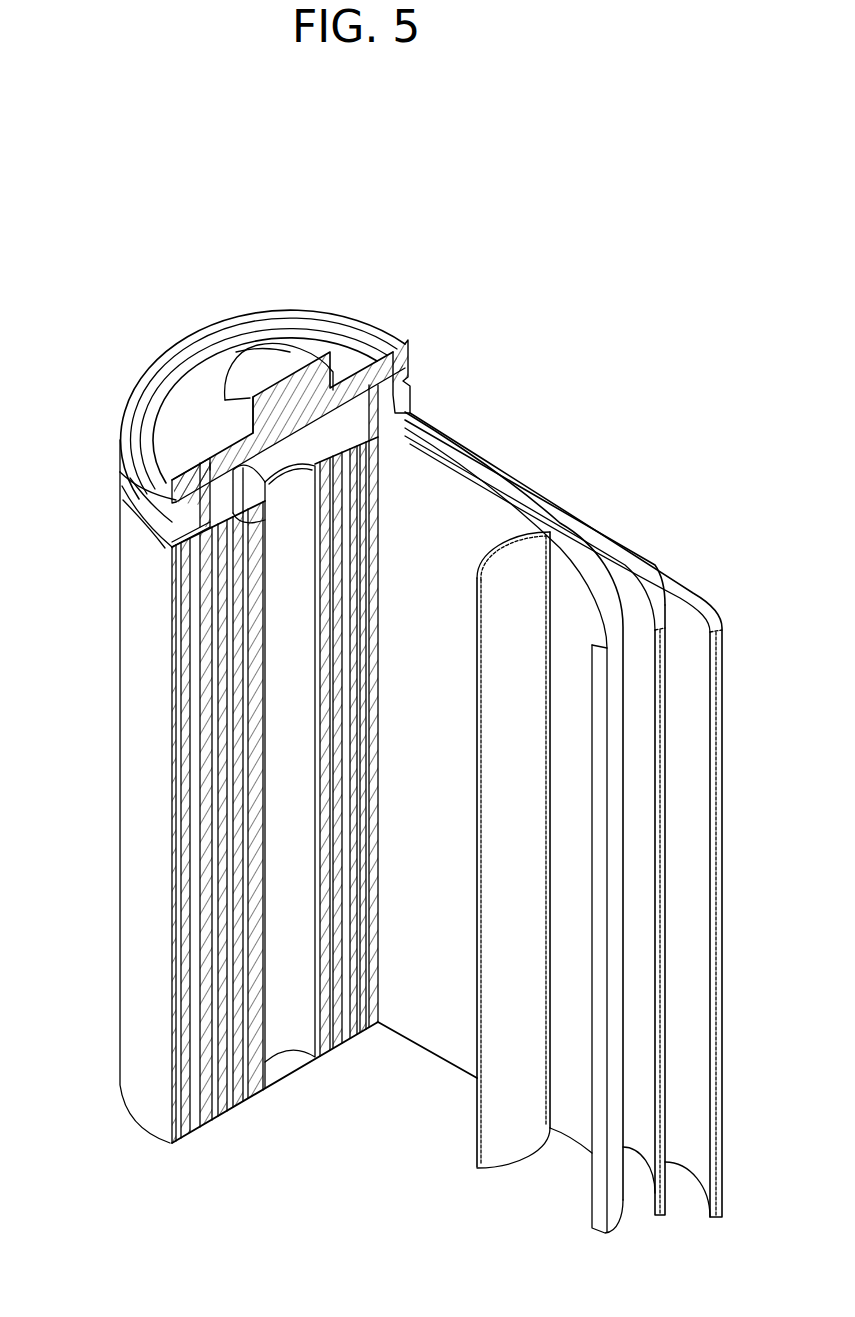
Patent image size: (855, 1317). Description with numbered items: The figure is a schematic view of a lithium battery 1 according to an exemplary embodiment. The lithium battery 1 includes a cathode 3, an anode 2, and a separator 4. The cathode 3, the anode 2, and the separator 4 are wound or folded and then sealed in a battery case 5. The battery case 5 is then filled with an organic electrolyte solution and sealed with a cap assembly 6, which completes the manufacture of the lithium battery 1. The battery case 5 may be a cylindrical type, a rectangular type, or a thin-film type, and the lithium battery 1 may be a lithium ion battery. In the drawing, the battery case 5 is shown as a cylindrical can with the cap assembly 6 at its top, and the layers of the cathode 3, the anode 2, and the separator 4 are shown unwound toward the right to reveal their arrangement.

The lithium battery 1 is at (575, 330).
The anode 2 is at (693, 592).
The cathode 3 is at (611, 590).
The separator 4 is at (517, 580).
The battery case 5 is at (128, 776).
The cap assembly 6 is at (257, 358).